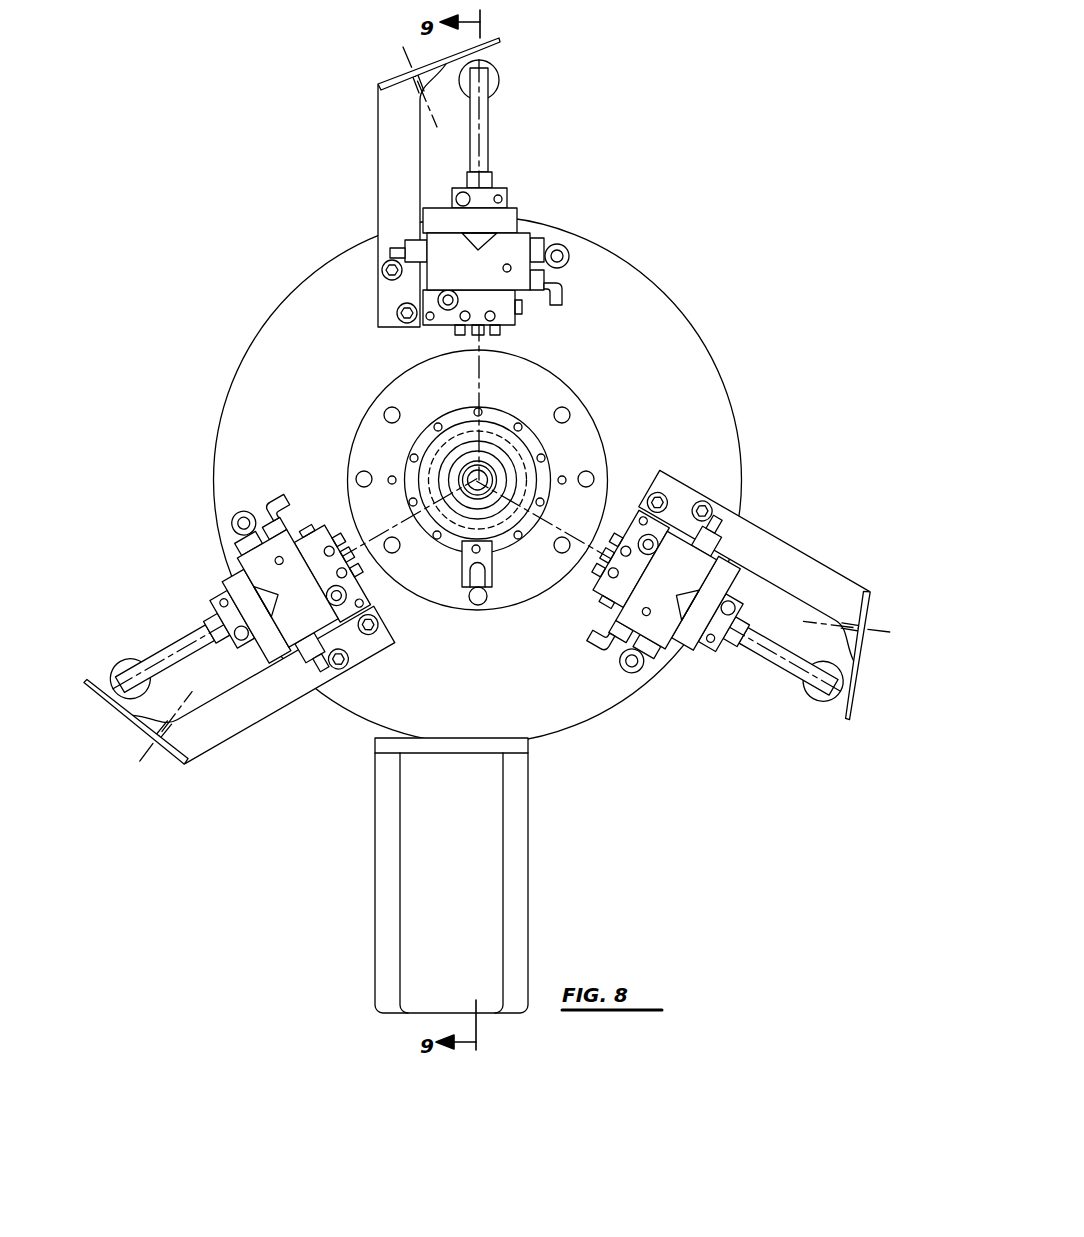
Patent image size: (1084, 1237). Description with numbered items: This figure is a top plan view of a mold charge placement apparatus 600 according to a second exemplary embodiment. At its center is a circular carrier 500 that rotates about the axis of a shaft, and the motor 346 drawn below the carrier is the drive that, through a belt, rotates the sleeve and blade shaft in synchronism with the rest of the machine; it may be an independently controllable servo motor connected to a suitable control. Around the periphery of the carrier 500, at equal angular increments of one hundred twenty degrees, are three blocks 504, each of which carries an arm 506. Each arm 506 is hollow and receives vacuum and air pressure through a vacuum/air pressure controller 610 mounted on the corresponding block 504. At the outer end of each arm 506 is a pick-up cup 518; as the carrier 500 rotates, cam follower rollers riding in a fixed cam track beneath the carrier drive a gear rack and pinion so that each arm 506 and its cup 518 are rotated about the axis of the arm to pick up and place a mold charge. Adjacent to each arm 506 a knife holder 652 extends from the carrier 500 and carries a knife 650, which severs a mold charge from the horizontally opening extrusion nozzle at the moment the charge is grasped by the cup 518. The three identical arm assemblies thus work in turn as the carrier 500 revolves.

The motor 346 is at (517, 865).
The carrier 500 is at (672, 301).
The block 504 is at (510, 210).
The arm 506 is at (487, 140).
The pick-up cup 518 is at (497, 82).
The mold charge placement apparatus 600 is at (490, 514).
The vacuum/air pressure controller 610 is at (520, 243).
The knife 650 is at (433, 63).
The knife holder 652 is at (385, 168).